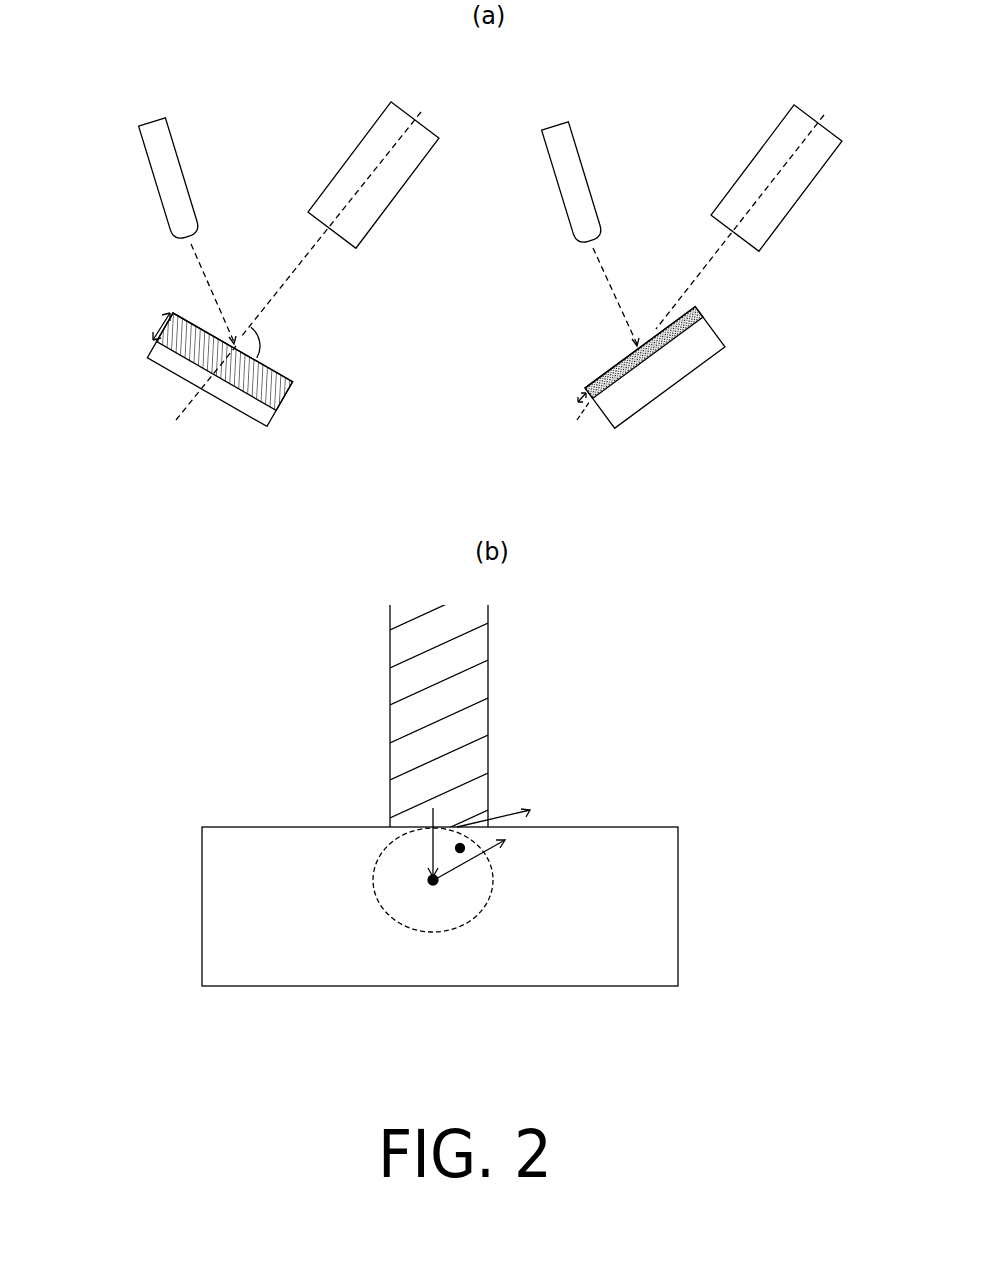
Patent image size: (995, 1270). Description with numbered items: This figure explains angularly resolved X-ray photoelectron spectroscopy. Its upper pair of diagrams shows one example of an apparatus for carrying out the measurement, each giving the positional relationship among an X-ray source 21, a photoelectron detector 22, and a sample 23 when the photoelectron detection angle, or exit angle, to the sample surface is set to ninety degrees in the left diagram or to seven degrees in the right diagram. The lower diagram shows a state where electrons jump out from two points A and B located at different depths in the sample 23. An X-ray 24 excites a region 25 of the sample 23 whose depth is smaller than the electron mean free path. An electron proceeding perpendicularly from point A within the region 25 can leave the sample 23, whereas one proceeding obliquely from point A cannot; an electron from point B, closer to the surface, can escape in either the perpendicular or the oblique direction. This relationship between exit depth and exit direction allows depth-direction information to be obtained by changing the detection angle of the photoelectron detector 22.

The X-ray source 21 is at (170, 143).
The photoelectron detector 22 is at (409, 173).
The sample 23 is at (267, 420).
The X-ray 24 is at (488, 712).
The region 25 is at (427, 940).